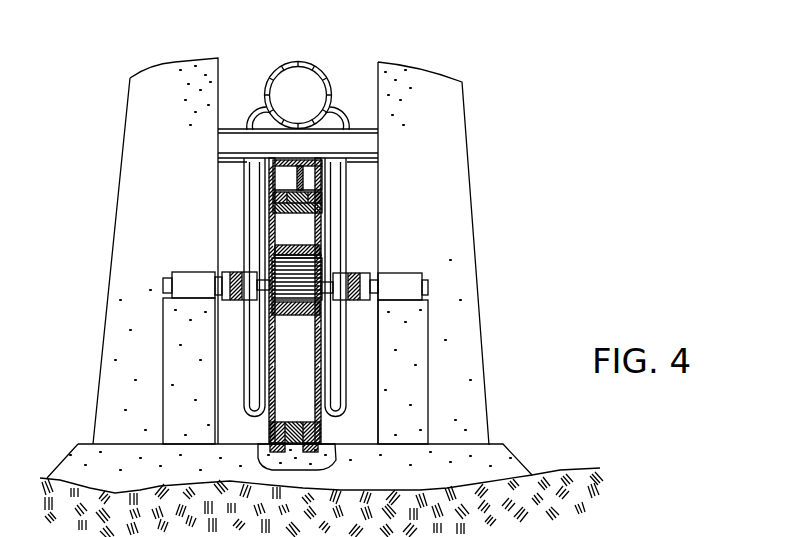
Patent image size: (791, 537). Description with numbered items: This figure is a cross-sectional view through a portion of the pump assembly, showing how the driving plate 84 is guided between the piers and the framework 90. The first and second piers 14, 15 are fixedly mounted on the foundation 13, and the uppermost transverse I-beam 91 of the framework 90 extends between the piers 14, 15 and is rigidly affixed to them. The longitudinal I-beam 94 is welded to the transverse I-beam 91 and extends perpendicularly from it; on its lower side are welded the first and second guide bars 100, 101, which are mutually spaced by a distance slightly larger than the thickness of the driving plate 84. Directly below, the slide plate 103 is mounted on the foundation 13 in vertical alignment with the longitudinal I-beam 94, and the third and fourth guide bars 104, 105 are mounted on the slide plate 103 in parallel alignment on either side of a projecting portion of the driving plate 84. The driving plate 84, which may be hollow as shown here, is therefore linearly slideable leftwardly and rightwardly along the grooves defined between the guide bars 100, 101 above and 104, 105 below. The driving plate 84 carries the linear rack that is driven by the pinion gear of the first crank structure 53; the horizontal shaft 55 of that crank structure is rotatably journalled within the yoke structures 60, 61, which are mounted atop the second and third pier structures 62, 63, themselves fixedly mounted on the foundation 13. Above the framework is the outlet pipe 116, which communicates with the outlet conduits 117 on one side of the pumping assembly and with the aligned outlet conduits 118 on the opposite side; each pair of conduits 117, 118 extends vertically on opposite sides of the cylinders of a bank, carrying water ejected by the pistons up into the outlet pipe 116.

The foundation 13 is at (495, 445).
The first pier 14 is at (410, 78).
The second pier 15 is at (180, 78).
The first crank structure 53 is at (324, 266).
The shaft 55 is at (325, 292).
The yoke structure 60 is at (400, 275).
The yoke structure 61 is at (190, 275).
The second pier structure 62 is at (403, 373).
The third pier structure 63 is at (190, 352).
The first driving plate 84 is at (268, 238).
The framework 90 is at (306, 177).
The first transverse I-beam 91 is at (363, 147).
The longitudinal I-beam 94 is at (283, 182).
The first guide bar 100 is at (270, 208).
The second guide bar 101 is at (321, 207).
The slide plate 103 is at (300, 455).
The third guide bar 104 is at (322, 437).
The fourth guide bar 105 is at (275, 437).
The outlet pipe 116 is at (292, 62).
The outlet conduit 117 is at (340, 172).
The outlet conduit 118 is at (255, 168).